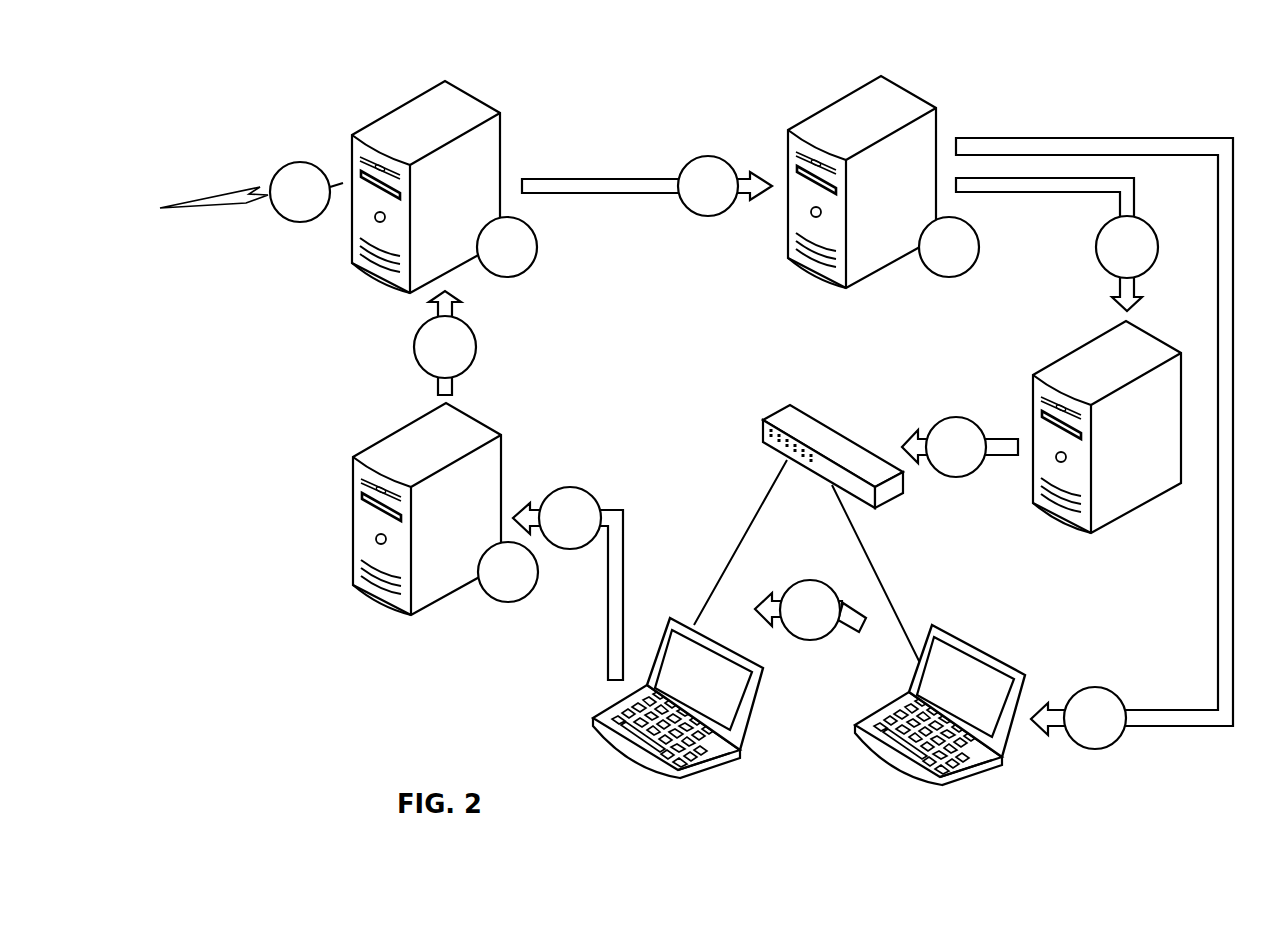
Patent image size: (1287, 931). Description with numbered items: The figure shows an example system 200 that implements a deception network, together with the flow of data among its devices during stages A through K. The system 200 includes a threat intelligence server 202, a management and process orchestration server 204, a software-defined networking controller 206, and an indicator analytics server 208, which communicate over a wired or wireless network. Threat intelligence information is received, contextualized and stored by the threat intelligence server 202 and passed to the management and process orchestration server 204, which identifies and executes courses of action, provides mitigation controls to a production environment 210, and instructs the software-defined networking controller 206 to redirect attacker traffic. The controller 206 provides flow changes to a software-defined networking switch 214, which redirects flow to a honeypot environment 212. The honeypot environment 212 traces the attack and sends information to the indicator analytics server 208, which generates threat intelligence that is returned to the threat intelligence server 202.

The system 200 is at (696, 421).
The threat intelligence server 202 is at (490, 103).
The management and process orchestration server 204 is at (927, 101).
The software-defined networking controller 206 is at (1128, 514).
The indicator analytics server 208 is at (437, 604).
The production environment 210 is at (1007, 658).
The honeypot environment 212 is at (603, 713).
The software-defined networking switch 214 is at (762, 430).